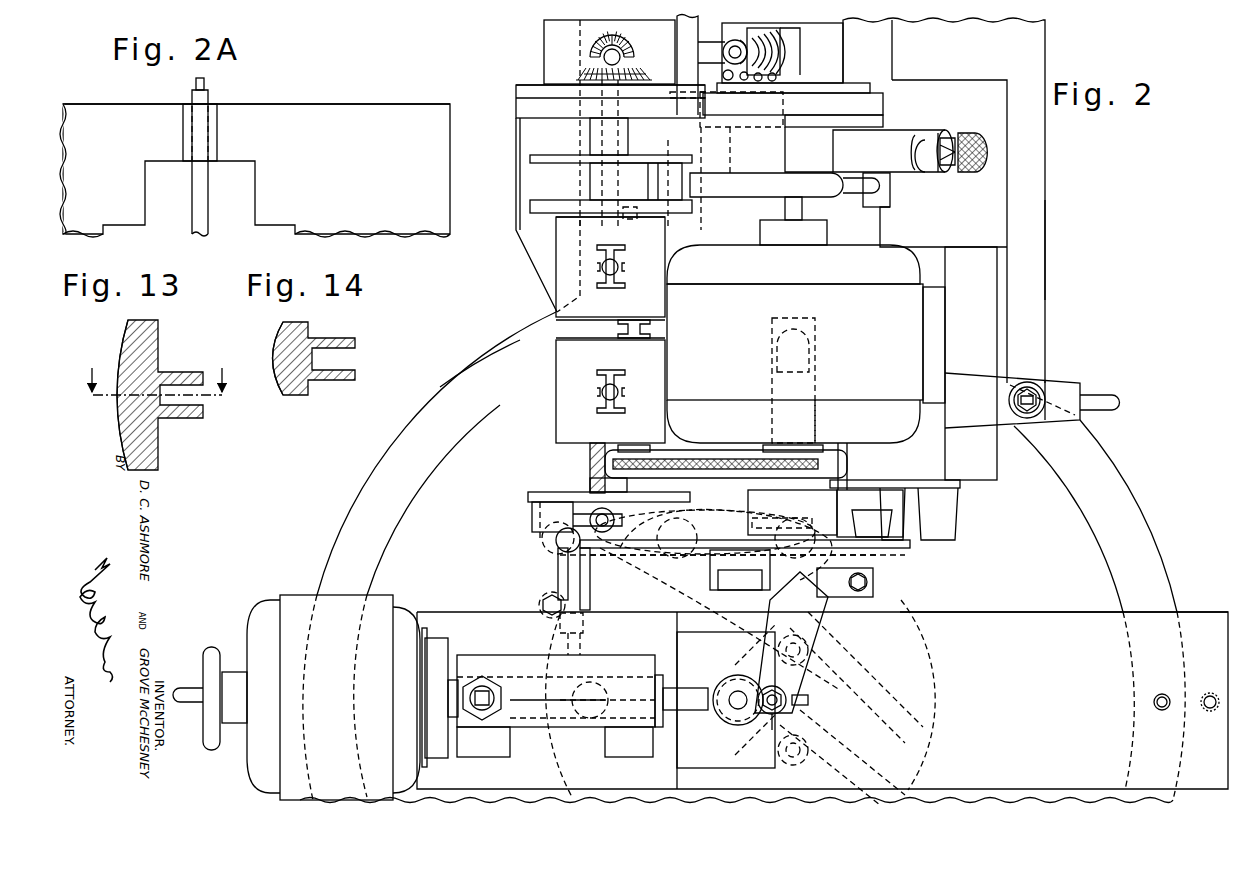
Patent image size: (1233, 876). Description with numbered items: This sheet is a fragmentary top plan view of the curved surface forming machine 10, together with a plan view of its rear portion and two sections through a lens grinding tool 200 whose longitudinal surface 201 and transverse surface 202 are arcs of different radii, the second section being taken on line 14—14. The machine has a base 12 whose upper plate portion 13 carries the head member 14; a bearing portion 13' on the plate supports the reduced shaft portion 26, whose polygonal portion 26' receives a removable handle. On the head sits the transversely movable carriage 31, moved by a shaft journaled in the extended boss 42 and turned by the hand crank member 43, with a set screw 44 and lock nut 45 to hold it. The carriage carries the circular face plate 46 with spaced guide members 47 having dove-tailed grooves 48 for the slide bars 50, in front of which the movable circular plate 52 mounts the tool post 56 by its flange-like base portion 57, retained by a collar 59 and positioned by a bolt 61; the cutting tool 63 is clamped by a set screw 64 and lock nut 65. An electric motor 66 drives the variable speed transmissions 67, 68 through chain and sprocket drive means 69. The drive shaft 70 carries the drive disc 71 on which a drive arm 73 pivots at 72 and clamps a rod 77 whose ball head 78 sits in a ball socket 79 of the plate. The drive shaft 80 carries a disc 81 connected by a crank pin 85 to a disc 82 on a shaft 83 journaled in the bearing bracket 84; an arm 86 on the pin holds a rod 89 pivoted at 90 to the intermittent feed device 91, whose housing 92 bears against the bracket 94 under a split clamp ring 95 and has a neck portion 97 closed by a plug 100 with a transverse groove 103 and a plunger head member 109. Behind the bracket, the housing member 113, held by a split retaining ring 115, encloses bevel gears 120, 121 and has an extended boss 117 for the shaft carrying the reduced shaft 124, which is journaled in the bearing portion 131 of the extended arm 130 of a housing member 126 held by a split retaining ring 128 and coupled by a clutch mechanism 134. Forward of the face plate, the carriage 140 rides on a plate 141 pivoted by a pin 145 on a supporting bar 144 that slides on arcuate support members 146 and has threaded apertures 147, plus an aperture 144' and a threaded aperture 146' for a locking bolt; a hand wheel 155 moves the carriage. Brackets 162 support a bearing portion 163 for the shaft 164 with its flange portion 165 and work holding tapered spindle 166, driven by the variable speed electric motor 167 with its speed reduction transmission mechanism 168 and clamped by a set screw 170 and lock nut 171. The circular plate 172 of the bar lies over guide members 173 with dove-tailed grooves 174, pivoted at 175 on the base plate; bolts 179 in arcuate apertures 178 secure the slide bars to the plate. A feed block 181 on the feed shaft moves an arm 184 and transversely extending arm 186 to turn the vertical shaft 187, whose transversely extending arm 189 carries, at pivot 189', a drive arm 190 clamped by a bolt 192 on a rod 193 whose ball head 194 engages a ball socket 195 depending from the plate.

In FIG. 2, the curved surface forming machine 10 is at (1048, 184).
In FIG. 2A, the base 12 is at (386, 104).
In FIG. 2, the base 12 is at (412, 418).
In FIG. 2A, the upper plate portion 13 is at (256, 98).
In FIG. 2, the upper plate portion 13 is at (480, 353).
In FIG. 2A, the bearing portion 13' is at (183, 132).
In FIG. 2A, the reduced shaft portion 26 is at (184, 163).
In FIG. 2A, the polygonal portion 26' is at (217, 82).
In FIG. 2, the transversely movable carriage 31 is at (948, 312).
In FIG. 2, the extended boss 42 is at (968, 380).
In FIG. 2, the hand crank member 43 is at (1112, 395).
In FIG. 2, the set screw 44 is at (1022, 390).
In FIG. 2, the lock nut 45 is at (1012, 400).
In FIG. 2, the circular face plate 46 is at (912, 486).
In FIG. 2, the guide members 47 is at (870, 492).
In FIG. 2, the dove-tailed groove 48 is at (845, 518).
In FIG. 2, the slide bar 50 is at (868, 513).
In FIG. 2, the movable circular plate 52 is at (910, 545).
In FIG. 2, the tool post 56 is at (772, 596).
In FIG. 2, the flange-like base portion 57 is at (700, 552).
In FIG. 2, the collar 59 is at (712, 580).
In FIG. 2, the bolt 61 is at (842, 594).
In FIG. 2, the cutting tool 63 is at (808, 700).
In FIG. 2, the set screw 64 is at (772, 716).
In FIG. 2, the lock nut 65 is at (771, 688).
In FIG. 2, the electric motor 66 is at (882, 248).
In FIG. 2, the variable speed transmission 67 is at (556, 374).
In FIG. 2, the variable speed transmission 68 is at (560, 292).
In FIG. 2, the chain and sprocket drive means 69 is at (738, 460).
In FIG. 2, the drive shaft 70 is at (598, 492).
In FIG. 2, the drive disc 71 is at (548, 492).
In FIG. 2, the pivot 72 is at (532, 524).
In FIG. 2, the drive arm 73 is at (568, 540).
In FIG. 2, the rod 77 is at (610, 517).
In FIG. 2, the ball head 78 is at (607, 510).
In FIG. 2, the ball socket 79 is at (615, 527).
In FIG. 2, the drive shaft 80 is at (640, 219).
In FIG. 2, the disc 81 is at (549, 202).
In FIG. 2, the disc 82 is at (541, 156).
In FIG. 2, the shaft 83 is at (602, 128).
In FIG. 2, the bearing bracket 84 is at (516, 108).
In FIG. 2, the crank pin 85 is at (655, 186).
In FIG. 2, the arm 86 is at (742, 192).
In FIG. 2, the rod 89 is at (847, 193).
In FIG. 2, the pivotal connection 90 is at (890, 187).
In FIG. 2, the intermittent feed device 91 is at (948, 176).
In FIG. 2, the housing 92 is at (792, 157).
In FIG. 2, the bracket 94 is at (883, 98).
In FIG. 2, the split clamp ring 95 is at (883, 119).
In FIG. 2, the neck portion 97 is at (908, 140).
In FIG. 2, the closure plug 100 is at (935, 172).
In FIG. 2, the transverse groove 103 is at (946, 137).
In FIG. 2, the head member 109 is at (972, 134).
In FIG. 2, the housing member 113 is at (544, 36).
In FIG. 2, the split retaining ring 115 is at (527, 90).
In FIG. 2, the extended boss 117 is at (690, 57).
In FIG. 2, the bevel gear 120 is at (575, 68).
In FIG. 2, the bevel gear 121 is at (625, 48).
In FIG. 2, the reduced shaft 124 is at (728, 52).
In FIG. 2, the housing member 126 is at (843, 60).
In FIG. 2, the split retaining ring 128 is at (822, 83).
In FIG. 2, the extended arm 130 is at (782, 28).
In FIG. 2, the bearing portion 131 is at (722, 30).
In FIG. 2, the clutch mechanism 134 is at (778, 58).
In FIG. 2, the transversely movable carriage 140 is at (508, 618).
In FIG. 2, the plate 141 is at (687, 638).
In FIG. 2, the supporting bar 144 is at (1064, 604).
In FIG. 2, the aperture 144' is at (1139, 700).
In FIG. 2, the pin 145 is at (738, 690).
In FIG. 2, the arcuate support members 146 is at (751, 556).
In FIG. 2, the threaded aperture 146' is at (1161, 712).
In FIG. 2, the threaded aperture 147 is at (1215, 707).
In FIG. 2, the hand wheel 155 is at (208, 650).
In FIG. 2, the brackets 162 is at (484, 754).
In FIG. 2, the bearing portion 163 is at (522, 737).
In FIG. 2, the shaft 164 is at (451, 689).
In FIG. 2, the flange portion 165 is at (655, 692).
In FIG. 2, the work holding tapered spindle 166 is at (694, 688).
In FIG. 2, the variable speed electric motor 167 is at (296, 600).
In FIG. 2, the speed reduction transmission mechanism 168 is at (443, 645).
In FIG. 2, the set screw 170 is at (478, 706).
In FIG. 2, the lock nut 171 is at (485, 685).
In FIG. 2, the circular plate 172 is at (588, 590).
In FIG. 2, the guide members 173 is at (866, 655).
In FIG. 2, the dove-tailed groove 174 is at (752, 657).
In FIG. 2, the pivot 175 is at (823, 712).
In FIG. 2, the arcuate aperture 178 is at (802, 564).
In FIG. 2, the bolt 179 is at (874, 582).
In FIG. 2, the feed block 181 is at (812, 322).
In FIG. 2, the arm 184 is at (815, 420).
In FIG. 2, the transversely extending arm 186 is at (740, 580).
In FIG. 2, the vertical shaft 187 is at (684, 532).
In FIG. 2, the transversely extending arm 189 is at (720, 565).
In FIG. 2, the pivot 189' is at (546, 539).
In FIG. 2, the drive arm 190 is at (558, 570).
In FIG. 2, the bolt 192 is at (546, 598).
In FIG. 2, the rod 193 is at (584, 637).
In FIG. 2, the ball head 194 is at (568, 705).
In FIG. 2, the ball socket 195 is at (580, 690).
In FIG. 13, the lens grinding tool 200 is at (158, 334).
In FIG. 14, the lens grinding tool 200 is at (308, 327).
In FIG. 13, the longitudinal surface 201 is at (117, 419).
In FIG. 14, the transverse surface 202 is at (284, 352).
In FIG. 13, the head member 14 is at (159, 371).